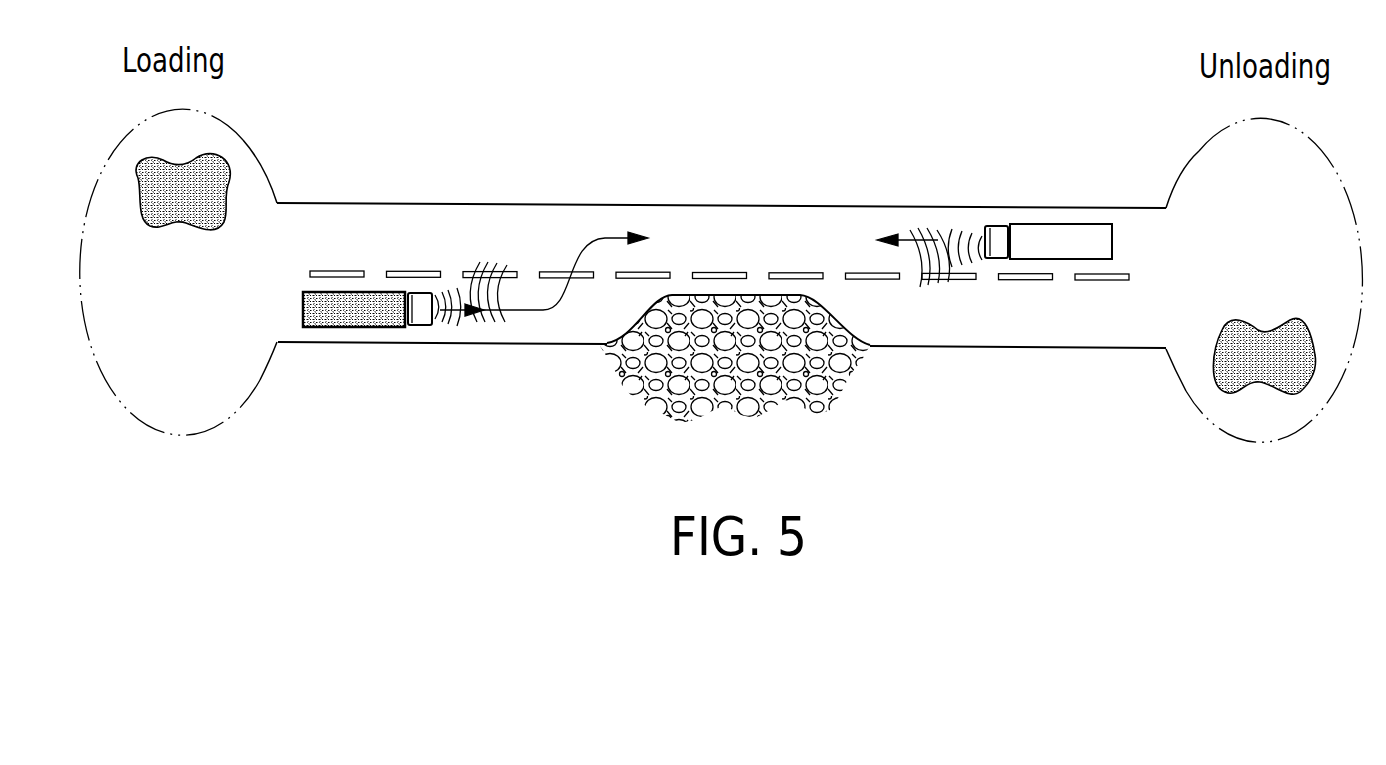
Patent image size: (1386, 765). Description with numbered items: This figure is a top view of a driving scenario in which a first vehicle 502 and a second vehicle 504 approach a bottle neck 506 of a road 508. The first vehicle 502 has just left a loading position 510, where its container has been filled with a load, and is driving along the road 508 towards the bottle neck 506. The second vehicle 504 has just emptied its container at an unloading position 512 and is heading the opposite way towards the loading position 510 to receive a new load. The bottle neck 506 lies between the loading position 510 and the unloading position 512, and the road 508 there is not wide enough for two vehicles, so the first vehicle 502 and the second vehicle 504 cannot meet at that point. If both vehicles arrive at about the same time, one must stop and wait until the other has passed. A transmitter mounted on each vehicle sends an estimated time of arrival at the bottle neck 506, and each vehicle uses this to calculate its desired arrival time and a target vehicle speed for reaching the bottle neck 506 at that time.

The first vehicle 502 is at (415, 318).
The second vehicle 504 is at (1003, 228).
The bottle neck 506 is at (745, 240).
The road 508 is at (489, 232).
The loading position 510 is at (227, 173).
The unloading position 512 is at (1300, 391).